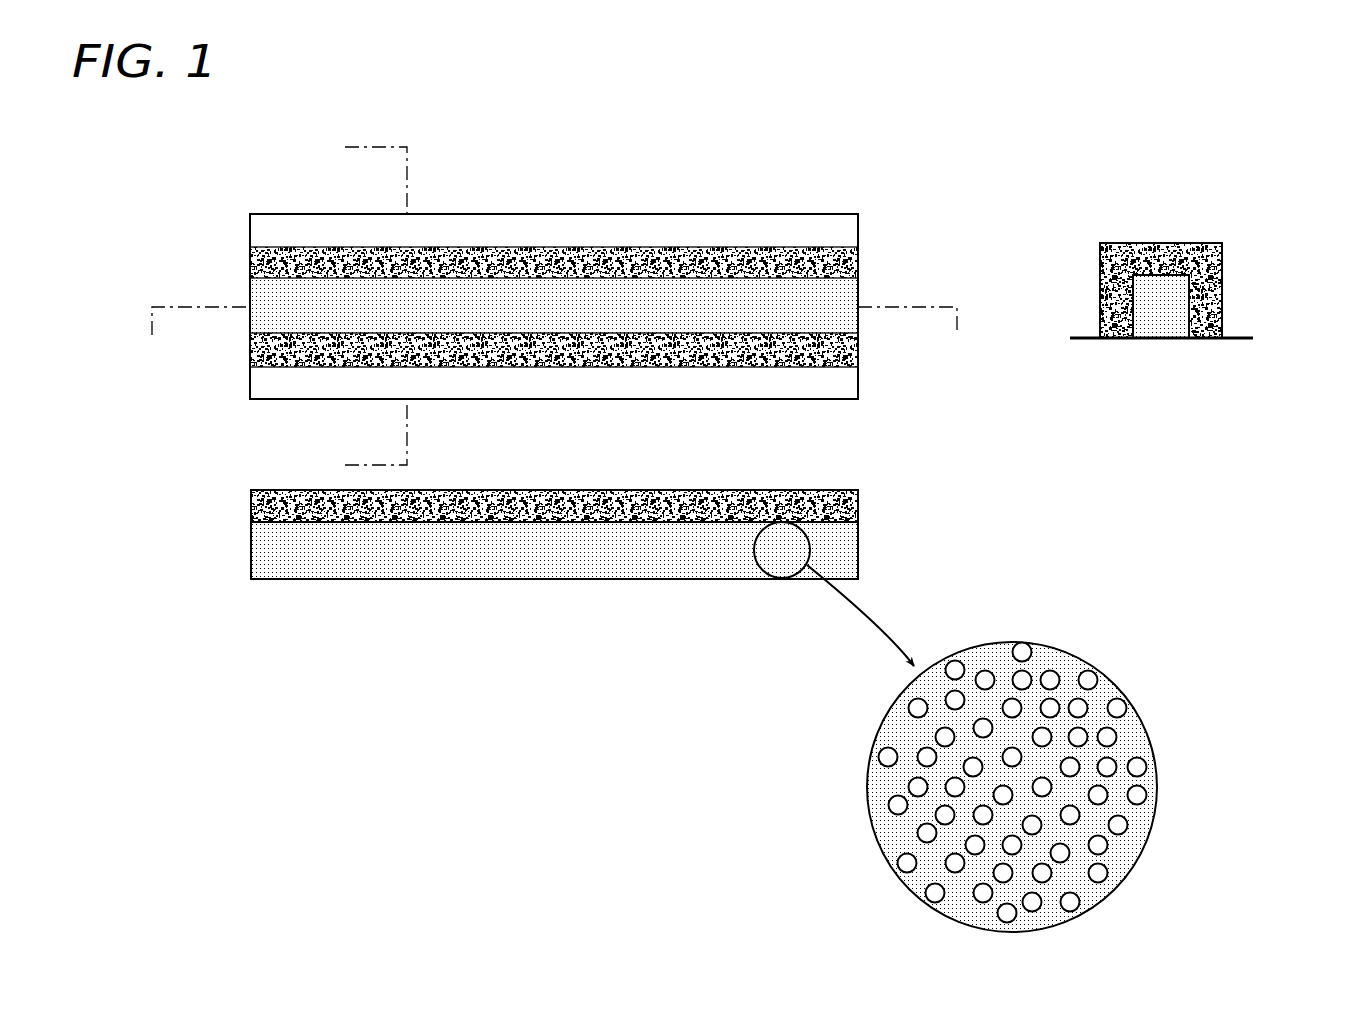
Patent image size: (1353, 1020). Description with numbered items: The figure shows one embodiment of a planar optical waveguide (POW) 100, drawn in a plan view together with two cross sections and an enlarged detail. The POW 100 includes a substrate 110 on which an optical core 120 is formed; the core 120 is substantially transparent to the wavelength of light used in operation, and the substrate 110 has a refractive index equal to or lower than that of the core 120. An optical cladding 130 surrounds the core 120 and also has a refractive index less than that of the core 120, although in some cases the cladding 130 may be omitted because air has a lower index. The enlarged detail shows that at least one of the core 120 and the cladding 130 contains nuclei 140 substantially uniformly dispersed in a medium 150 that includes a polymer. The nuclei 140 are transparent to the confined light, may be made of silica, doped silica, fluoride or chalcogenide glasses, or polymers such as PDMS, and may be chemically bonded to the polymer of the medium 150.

The planar optical waveguide 100 is at (200, 156).
The substrate 110 is at (251, 579).
The optical core 120 is at (571, 318).
The optical cladding 130 is at (858, 262).
The nuclei 140 is at (1087, 703).
The medium 150 is at (1050, 655).